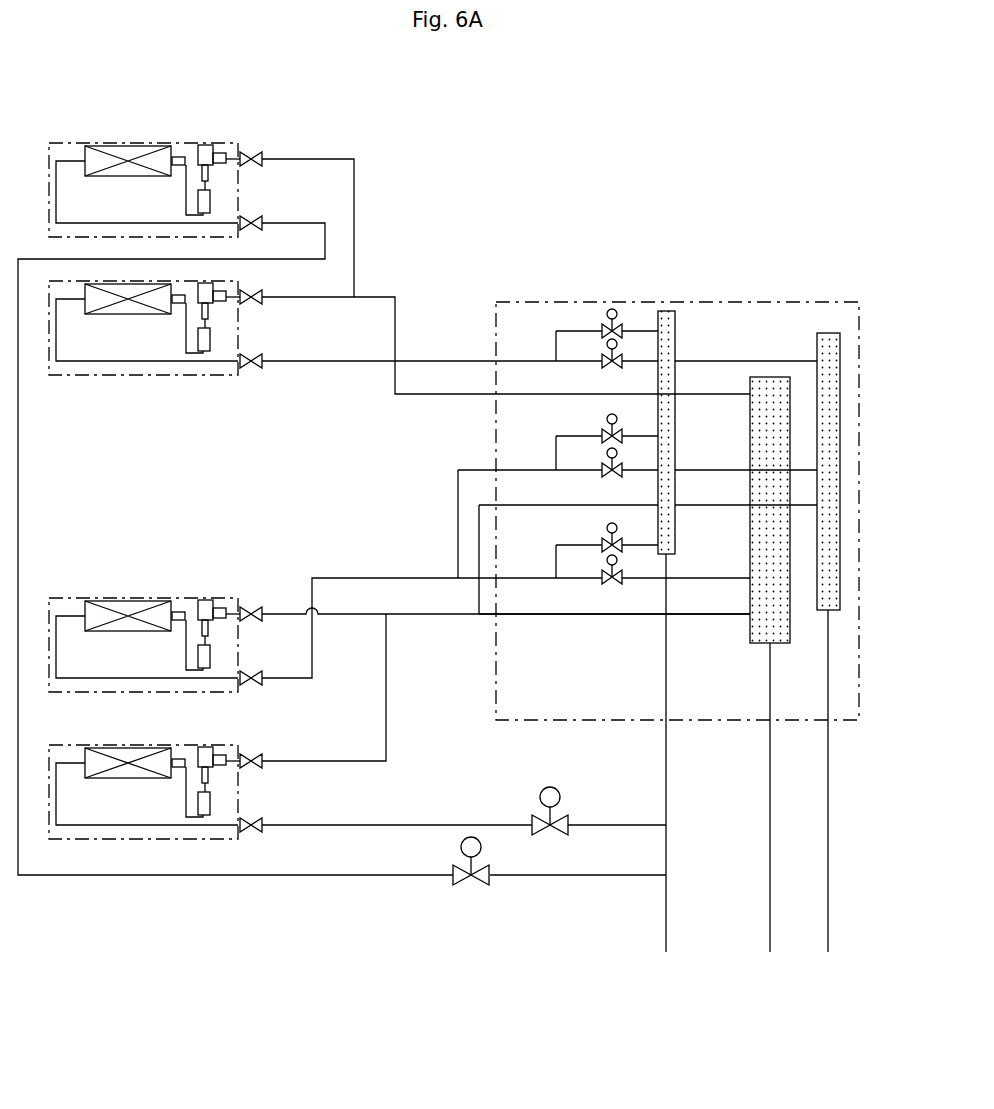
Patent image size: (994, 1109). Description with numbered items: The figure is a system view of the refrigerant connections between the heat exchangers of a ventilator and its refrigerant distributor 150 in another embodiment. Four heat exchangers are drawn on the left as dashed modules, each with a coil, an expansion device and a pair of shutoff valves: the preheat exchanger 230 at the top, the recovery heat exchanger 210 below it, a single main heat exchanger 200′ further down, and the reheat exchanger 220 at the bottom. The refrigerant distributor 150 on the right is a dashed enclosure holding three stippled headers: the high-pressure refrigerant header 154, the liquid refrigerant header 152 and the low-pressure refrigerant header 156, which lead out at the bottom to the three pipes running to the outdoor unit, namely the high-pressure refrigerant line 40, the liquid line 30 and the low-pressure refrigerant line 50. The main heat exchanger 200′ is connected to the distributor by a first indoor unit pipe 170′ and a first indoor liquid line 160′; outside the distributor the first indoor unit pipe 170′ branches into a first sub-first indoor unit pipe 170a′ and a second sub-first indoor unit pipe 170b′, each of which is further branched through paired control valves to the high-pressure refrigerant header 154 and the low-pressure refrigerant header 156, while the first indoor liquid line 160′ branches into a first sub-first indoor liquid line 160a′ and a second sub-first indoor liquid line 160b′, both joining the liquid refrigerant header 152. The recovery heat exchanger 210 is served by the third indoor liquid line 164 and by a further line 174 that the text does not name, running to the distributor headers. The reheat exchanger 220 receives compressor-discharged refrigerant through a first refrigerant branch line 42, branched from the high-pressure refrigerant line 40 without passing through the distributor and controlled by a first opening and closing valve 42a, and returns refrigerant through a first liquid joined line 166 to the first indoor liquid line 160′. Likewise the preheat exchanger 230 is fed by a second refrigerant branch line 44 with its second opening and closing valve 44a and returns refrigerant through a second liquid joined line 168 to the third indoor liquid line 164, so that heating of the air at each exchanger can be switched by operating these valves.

The preheat exchanger 230 is at (58, 143).
The recovery heat exchanger 210 is at (70, 375).
The main heat exchanger 200′ is at (88, 598).
The reheat exchanger 220 is at (70, 745).
The second liquid joined line 168 is at (355, 210).
The third indoor liquid line 164 is at (316, 297).
The refrigerant pipe 174 is at (305, 362).
The second refrigerant branch line 44 is at (270, 875).
The second opening and closing valve 44a is at (465, 883).
The first refrigerant branch line 42 is at (398, 826).
The first opening and closing valve 42a is at (556, 826).
The first indoor liquid line 160′ is at (350, 614).
The first indoor unit pipe 170′ is at (336, 578).
The first liquid joined line 166 is at (386, 733).
The refrigerant distributor 150 is at (859, 310).
The high-pressure refrigerant header 154 is at (668, 311).
The liquid refrigerant header 152 is at (765, 385).
The low-pressure refrigerant header 156 is at (830, 385).
The second sub-first indoor unit pipe 170b′ is at (522, 470).
The second sub-first indoor liquid line 160b′ is at (525, 505).
The first sub-first indoor unit pipe 170a′ is at (522, 577).
The first sub-first indoor liquid line 160a′ is at (565, 614).
The high-pressure refrigerant line 40 is at (666, 940).
The liquid line 30 is at (770, 940).
The low-pressure refrigerant line 50 is at (828, 940).